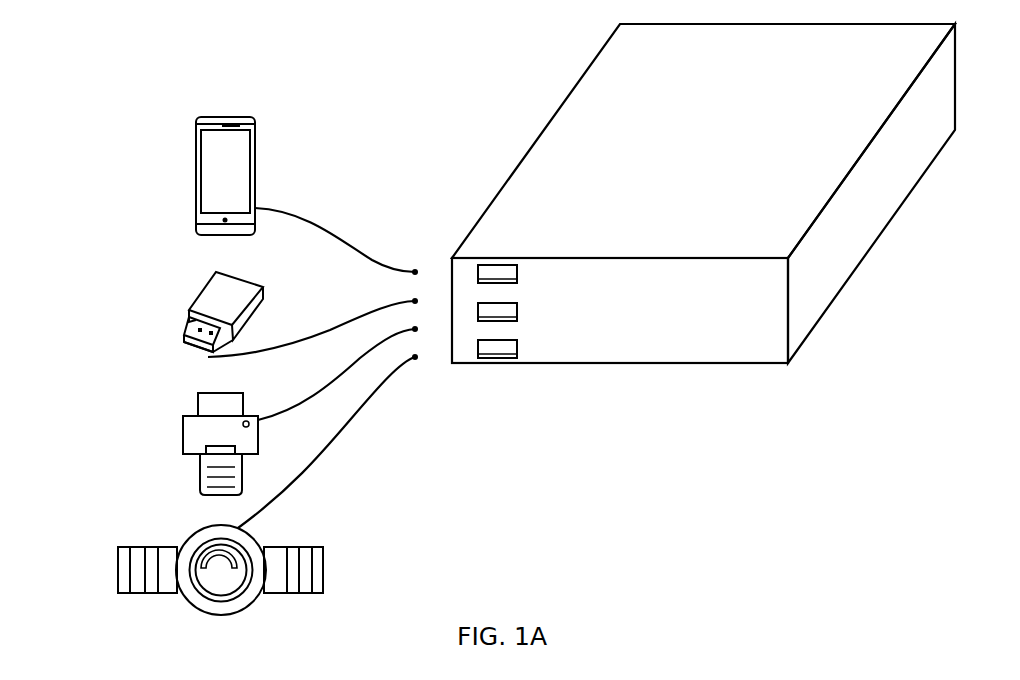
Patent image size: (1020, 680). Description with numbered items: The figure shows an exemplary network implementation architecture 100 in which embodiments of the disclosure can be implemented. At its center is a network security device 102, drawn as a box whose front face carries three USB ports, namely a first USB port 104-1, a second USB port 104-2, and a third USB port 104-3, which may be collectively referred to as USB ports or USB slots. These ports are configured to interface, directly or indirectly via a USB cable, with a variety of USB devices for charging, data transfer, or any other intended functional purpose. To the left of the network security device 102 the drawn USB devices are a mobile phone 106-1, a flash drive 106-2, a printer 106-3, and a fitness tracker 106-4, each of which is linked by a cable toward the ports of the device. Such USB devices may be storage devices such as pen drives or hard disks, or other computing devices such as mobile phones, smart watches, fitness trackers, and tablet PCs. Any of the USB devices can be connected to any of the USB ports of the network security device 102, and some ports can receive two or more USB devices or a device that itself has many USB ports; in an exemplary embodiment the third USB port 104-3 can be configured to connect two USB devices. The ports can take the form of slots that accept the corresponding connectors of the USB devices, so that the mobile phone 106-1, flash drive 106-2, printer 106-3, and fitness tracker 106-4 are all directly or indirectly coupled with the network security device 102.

The system 100 is at (152, 60).
The network security device 102 is at (703, 193).
The USB port 104-1 is at (526, 283).
The USB port 104-2 is at (526, 320).
The USB port 104-3 is at (526, 357).
The mobile phone 106-1 is at (186, 169).
The flash drive 106-2 is at (183, 298).
The printer 106-3 is at (173, 430).
The fitness tracker 106-4 is at (108, 570).